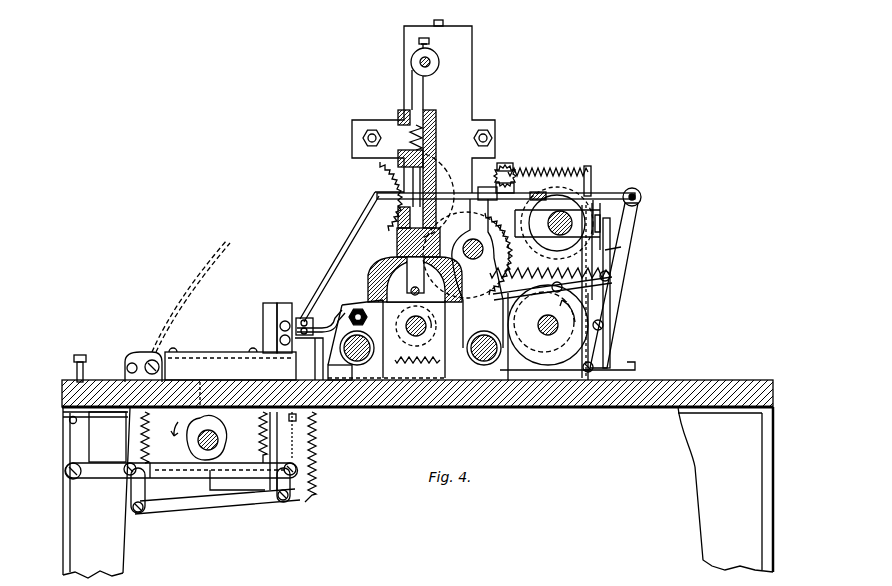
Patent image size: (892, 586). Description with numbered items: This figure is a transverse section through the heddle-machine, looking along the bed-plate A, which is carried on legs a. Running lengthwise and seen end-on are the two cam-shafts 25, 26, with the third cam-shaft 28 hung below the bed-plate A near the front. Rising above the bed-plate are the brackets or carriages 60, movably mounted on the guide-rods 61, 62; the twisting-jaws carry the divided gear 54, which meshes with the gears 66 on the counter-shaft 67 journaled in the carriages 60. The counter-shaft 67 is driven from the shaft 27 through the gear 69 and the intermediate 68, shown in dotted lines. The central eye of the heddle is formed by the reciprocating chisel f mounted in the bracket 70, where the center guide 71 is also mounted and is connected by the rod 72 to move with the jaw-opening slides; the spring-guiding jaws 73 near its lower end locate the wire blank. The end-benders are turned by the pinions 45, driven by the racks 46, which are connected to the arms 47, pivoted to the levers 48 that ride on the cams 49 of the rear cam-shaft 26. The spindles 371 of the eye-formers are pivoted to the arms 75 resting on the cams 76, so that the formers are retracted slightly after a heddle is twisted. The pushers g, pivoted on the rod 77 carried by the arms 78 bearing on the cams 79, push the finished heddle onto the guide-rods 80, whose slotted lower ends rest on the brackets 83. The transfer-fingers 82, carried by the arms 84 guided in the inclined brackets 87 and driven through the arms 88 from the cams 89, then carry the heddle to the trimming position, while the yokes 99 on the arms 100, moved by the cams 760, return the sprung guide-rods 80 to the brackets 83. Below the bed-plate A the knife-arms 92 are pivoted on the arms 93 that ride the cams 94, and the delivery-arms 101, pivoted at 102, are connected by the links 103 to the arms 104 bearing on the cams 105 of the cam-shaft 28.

The cam-shaft 25 is at (410, 320).
The rear cam-shaft 26 is at (547, 336).
The shaft 27 is at (606, 196).
The third cam-shaft 28 is at (216, 437).
The pinion 45 is at (508, 182).
The rack 46 is at (506, 172).
The arm 47 is at (565, 220).
The lever 48 is at (608, 289).
The cam 49 is at (610, 347).
The divided gear 54 is at (393, 182).
The bracket or carriage 60 is at (423, 106).
The guide-rod 61 is at (355, 382).
The guide-rod 62 is at (478, 382).
The gear 66 is at (500, 238).
The counter-shaft 67 is at (470, 247).
The intermediate 68 is at (545, 270).
The gear 69 is at (621, 247).
The bracket 70 is at (386, 261).
The center guide 71 is at (417, 88).
The rod 72 is at (430, 62).
The spring-guiding jaws 73 is at (370, 193).
The arm 75 is at (588, 266).
The cam 76 is at (560, 372).
The rod 77 is at (636, 195).
The arm 78 is at (620, 263).
The cam 79 is at (548, 325).
The guide-rod 80 is at (353, 228).
The transfer-finger 82 is at (285, 341).
The bracket 83 is at (302, 317).
The arm 84 is at (280, 307).
The inclined bracket 87 is at (265, 315).
The arm 88 is at (235, 500).
The cam 89 is at (192, 448).
The knife-arm 92 is at (268, 447).
The arm 93 is at (118, 479).
The cam 94 is at (203, 405).
The yoke or guide 99 is at (338, 314).
The arm 100 is at (376, 382).
The delivery-arm 101 is at (170, 347).
The pivot 102 is at (148, 360).
The link 103 is at (128, 434).
The arm 104 is at (173, 480).
The cam 105 is at (220, 452).
The spindle 371 is at (538, 199).
The cam 760 is at (423, 323).
The bed-plate A is at (686, 392).
The leg a is at (745, 470).
The former or chisel f is at (415, 276).
The pusher g is at (446, 190).